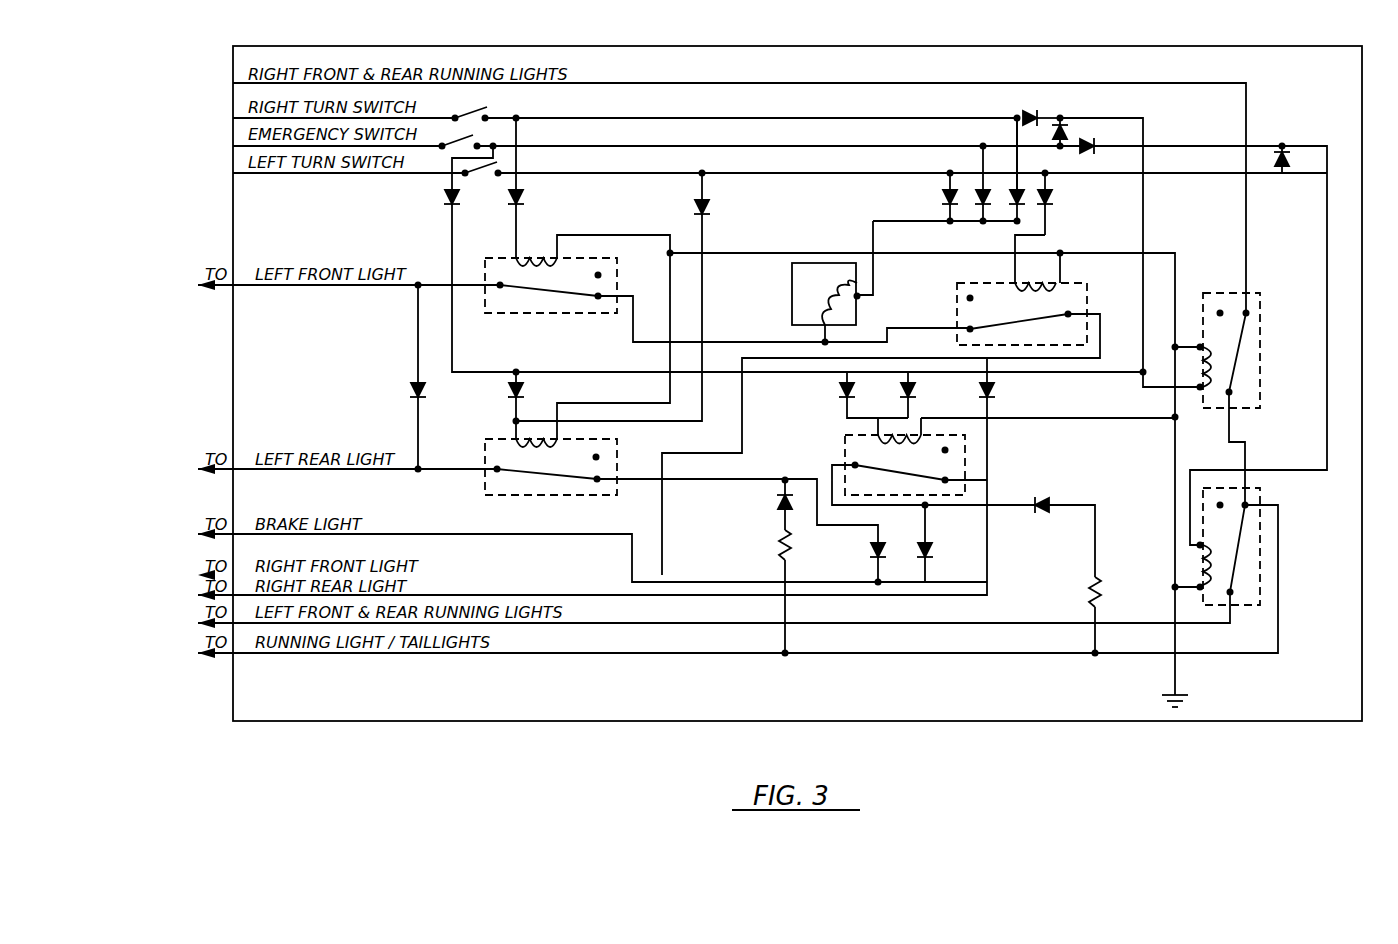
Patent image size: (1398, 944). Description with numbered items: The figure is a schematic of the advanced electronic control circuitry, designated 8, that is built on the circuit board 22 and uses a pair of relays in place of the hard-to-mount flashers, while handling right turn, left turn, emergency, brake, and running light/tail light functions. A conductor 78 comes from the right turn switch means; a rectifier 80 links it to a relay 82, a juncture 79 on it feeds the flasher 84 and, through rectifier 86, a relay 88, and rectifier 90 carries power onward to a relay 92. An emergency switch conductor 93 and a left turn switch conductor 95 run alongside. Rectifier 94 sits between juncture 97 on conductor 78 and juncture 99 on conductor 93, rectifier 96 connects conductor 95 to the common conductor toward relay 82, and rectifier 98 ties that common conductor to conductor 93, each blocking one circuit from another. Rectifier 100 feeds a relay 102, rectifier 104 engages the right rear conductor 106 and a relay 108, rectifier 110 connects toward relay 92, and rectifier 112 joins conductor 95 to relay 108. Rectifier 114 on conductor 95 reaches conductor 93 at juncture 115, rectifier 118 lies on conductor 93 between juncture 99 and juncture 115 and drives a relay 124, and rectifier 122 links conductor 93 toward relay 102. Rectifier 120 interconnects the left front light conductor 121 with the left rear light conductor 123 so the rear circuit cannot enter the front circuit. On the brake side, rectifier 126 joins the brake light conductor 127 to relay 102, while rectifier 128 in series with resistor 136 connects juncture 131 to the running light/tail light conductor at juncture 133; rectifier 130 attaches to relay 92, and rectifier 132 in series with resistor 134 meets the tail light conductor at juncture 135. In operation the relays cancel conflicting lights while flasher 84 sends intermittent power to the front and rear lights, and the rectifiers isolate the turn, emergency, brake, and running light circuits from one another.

The lighting control circuit 8 is at (1366, 396).
The circuit board 22 is at (1319, 684).
The conductor 78 is at (496, 118).
The juncture 79 is at (1015, 117).
The rectifier 80 is at (528, 195).
The relay 82 is at (528, 312).
The flasher 84 is at (825, 301).
The rectifier 86 is at (1025, 116).
The relay 88 is at (1259, 383).
The rectifier 90 is at (905, 384).
The relay 92 is at (884, 493).
The emergency switch conductor 93 is at (712, 146).
The rectifier 94 is at (1059, 149).
The left turn switch conductor 95 is at (792, 173).
The rectifier 96 is at (940, 192).
The juncture 97 is at (1062, 118).
The rectifier 98 is at (980, 190).
The juncture 99 is at (1063, 149).
The rectifier 100 is at (843, 404).
The relay 102 is at (542, 492).
The rectifier 104 is at (996, 401).
The right rear conductor 106 is at (530, 595).
The relay 108 is at (695, 209).
The rectifier 110 is at (508, 391).
The rectifier 112 is at (1053, 202).
The rectifier 114 is at (1288, 159).
The juncture 115 is at (1281, 144).
The rectifier 118 is at (1098, 148).
The rectifier 120 is at (425, 393).
The left front light conductor 121 is at (445, 282).
The rectifier 122 is at (445, 198).
The left rear light conductor 123 is at (358, 471).
The relay 124 is at (1240, 545).
The rectifier 126 is at (872, 565).
The brake light conductor 127 is at (831, 585).
The rectifier 128 is at (780, 512).
The rectifier 130 is at (930, 564).
The juncture 131 is at (800, 454).
The rectifier 132 is at (1050, 499).
The juncture 133 is at (793, 652).
The resistor 134 is at (1100, 599).
The juncture 135 is at (1092, 659).
The resistor 136 is at (780, 547).